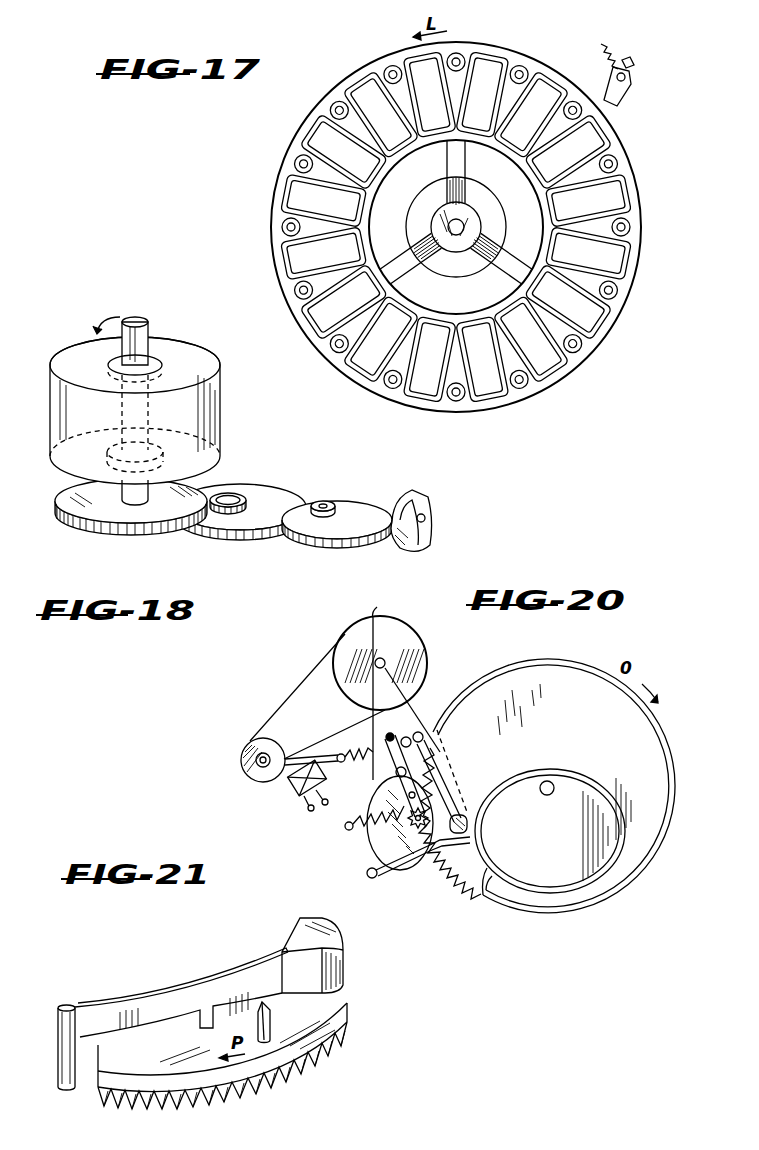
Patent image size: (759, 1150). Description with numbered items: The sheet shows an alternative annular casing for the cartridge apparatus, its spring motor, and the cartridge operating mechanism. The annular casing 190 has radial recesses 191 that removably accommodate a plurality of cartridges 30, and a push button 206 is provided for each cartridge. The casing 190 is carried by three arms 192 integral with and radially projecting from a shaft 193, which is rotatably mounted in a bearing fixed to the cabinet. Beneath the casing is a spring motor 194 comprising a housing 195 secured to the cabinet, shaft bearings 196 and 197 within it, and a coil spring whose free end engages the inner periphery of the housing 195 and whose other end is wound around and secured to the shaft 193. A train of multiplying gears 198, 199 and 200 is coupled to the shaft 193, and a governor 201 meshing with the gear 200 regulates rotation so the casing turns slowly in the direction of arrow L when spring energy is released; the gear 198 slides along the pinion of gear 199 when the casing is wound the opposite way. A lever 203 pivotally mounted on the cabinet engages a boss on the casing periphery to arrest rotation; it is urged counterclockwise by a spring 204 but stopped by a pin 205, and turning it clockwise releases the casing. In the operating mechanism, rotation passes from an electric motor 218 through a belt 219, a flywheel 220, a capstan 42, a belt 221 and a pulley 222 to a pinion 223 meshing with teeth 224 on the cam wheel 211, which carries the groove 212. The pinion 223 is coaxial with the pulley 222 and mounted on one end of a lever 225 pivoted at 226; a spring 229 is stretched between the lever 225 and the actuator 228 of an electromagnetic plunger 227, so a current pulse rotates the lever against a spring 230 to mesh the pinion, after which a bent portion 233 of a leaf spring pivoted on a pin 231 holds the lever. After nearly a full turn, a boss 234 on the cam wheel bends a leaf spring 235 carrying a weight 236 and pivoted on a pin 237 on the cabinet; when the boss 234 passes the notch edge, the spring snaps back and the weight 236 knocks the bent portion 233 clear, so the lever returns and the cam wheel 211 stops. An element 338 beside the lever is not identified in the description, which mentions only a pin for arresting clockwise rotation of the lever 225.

In FIG. 17, the annular casing 190 is at (686, 266).
In FIG. 17, the radial recesses 191 is at (487, 55).
In FIG. 17, the cartridges 30 is at (500, 70).
In FIG. 17, the push buttons 206 is at (461, 52).
In FIG. 17, the arms 192 is at (466, 163).
In FIG. 17, the shaft 193 is at (475, 221).
In FIG. 18, the shaft 193 is at (150, 331).
In FIG. 17, the spring motor 194 is at (411, 228).
In FIG. 18, the spring motor 194 is at (275, 395).
In FIG. 18, the housing 195 is at (56, 460).
In FIG. 18, the shaft bearing 196 is at (165, 362).
In FIG. 18, the shaft bearing 197 is at (200, 455).
In FIG. 18, the multiplying gear 198 is at (95, 540).
In FIG. 18, the multiplying gear 199 is at (200, 542).
In FIG. 18, the multiplying gear 200 is at (300, 545).
In FIG. 18, the governor 201 is at (420, 526).
In FIG. 17, the lever 203 is at (633, 86).
In FIG. 17, the spring 204 is at (620, 45).
In FIG. 17, the pin 205 is at (636, 65).
In FIG. 20, the capstan 42 is at (371, 645).
In FIG. 20, the flywheel 220 is at (426, 654).
In FIG. 20, the belt 221 is at (420, 675).
In FIG. 20, the belt 219 is at (296, 690).
In FIG. 20, the electric motor 218 is at (245, 778).
In FIG. 20, the actuator 228 is at (321, 757).
In FIG. 20, the spring 229 is at (348, 750).
In FIG. 20, the lever 225 is at (370, 755).
In FIG. 20, the pivot 226 is at (358, 790).
In FIG. 20, the electromagnetic plunger 227 is at (296, 792).
In FIG. 20, the pinion 223 is at (378, 848).
In FIG. 20, the pulley 222 is at (412, 860).
In FIG. 20, the spring 230 is at (367, 828).
In FIG. 20, the pin 231 is at (368, 878).
In FIG. 20, the bent portion 233 is at (425, 862).
In FIG. 20, the pin 237 is at (428, 739).
In FIG. 21, the pin 237 is at (67, 1005).
In FIG. 20, the pivot 338 is at (410, 736).
In FIG. 20, the boss 234 is at (441, 778).
In FIG. 21, the boss 234 is at (272, 1024).
In FIG. 20, the leaf spring 235 is at (449, 800).
In FIG. 21, the leaf spring 235 is at (140, 999).
In FIG. 20, the weight 236 is at (470, 824).
In FIG. 21, the weight 236 is at (344, 946).
In FIG. 20, the teeth 224 is at (460, 900).
In FIG. 21, the teeth 224 is at (268, 1095).
In FIG. 20, the cam wheel 211 is at (648, 887).
In FIG. 21, the cam wheel 211 is at (348, 1010).
In FIG. 20, the groove 212 is at (586, 781).